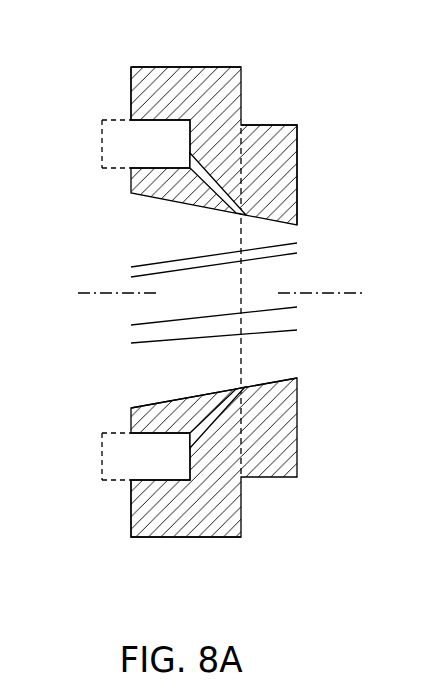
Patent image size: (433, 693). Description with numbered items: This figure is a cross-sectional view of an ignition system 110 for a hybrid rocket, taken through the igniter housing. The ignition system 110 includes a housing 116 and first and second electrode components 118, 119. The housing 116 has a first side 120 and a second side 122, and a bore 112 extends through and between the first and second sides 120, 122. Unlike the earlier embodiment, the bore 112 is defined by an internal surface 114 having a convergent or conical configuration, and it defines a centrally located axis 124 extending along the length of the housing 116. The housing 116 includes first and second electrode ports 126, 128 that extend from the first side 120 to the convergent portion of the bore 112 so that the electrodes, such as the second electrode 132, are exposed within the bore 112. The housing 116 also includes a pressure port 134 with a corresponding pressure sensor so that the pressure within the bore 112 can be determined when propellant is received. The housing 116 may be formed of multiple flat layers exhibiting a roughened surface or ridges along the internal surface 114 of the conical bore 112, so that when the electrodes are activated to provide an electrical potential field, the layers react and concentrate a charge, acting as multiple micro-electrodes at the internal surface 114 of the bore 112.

The ignition system 110 is at (293, 530).
The bore 112 is at (150, 253).
The internal surface 114 is at (145, 405).
The housing 116 is at (162, 64).
The first electrode component 118 is at (113, 120).
The second electrode component 119 is at (112, 433).
The first side 120 is at (131, 90).
The second side 122 is at (300, 145).
The axis 124 is at (322, 293).
The first electrode port 126 is at (130, 166).
The second electrode port 128 is at (135, 478).
The second electrode 132 is at (243, 388).
The pressure port 134 is at (151, 324).